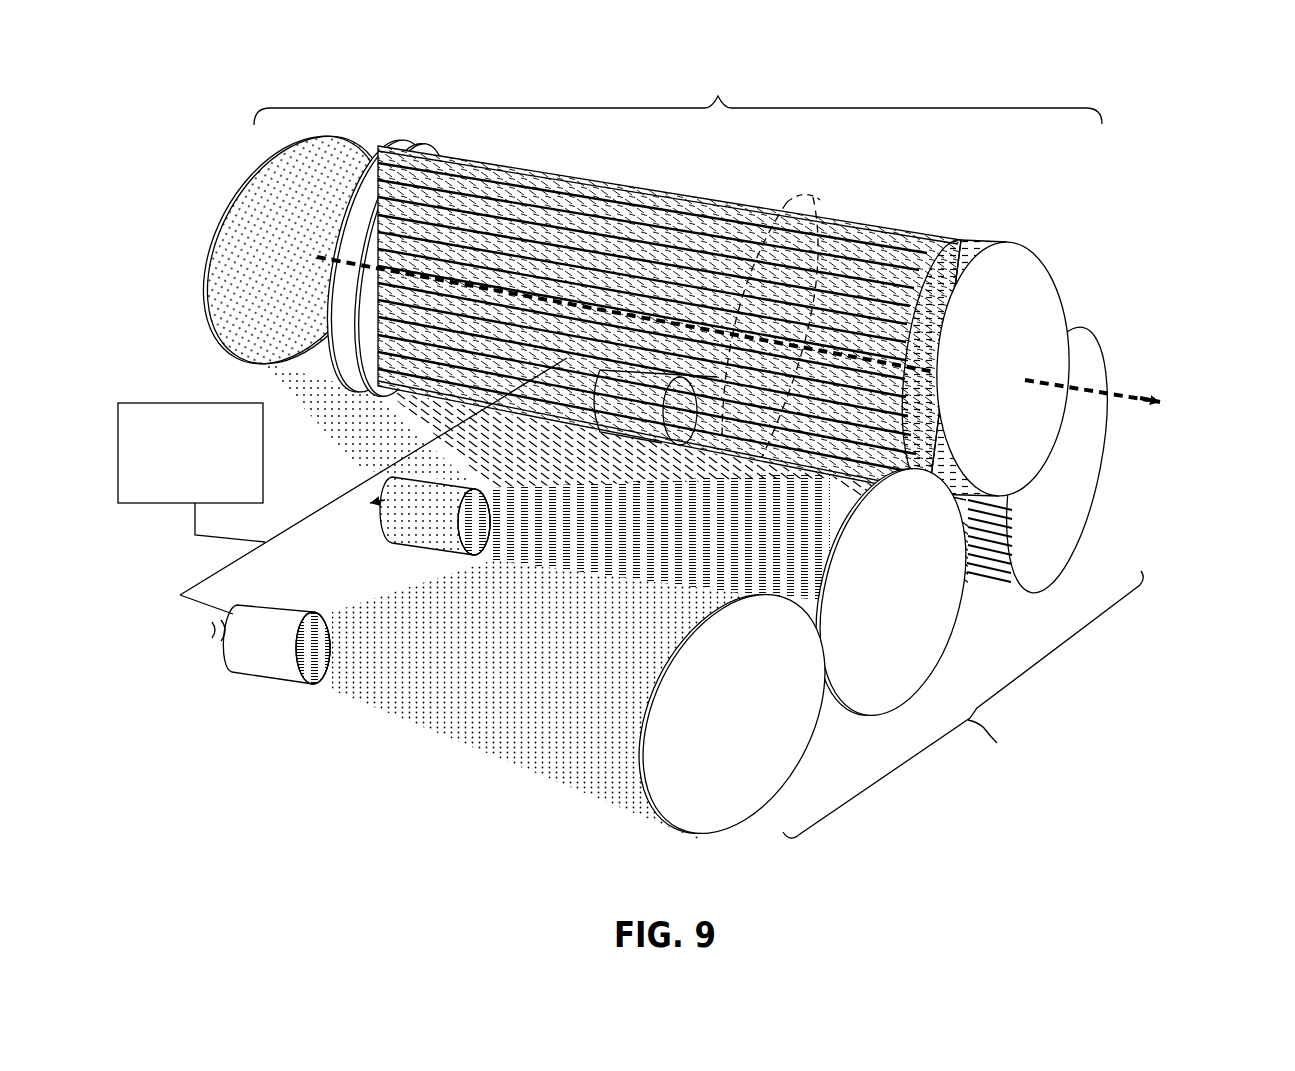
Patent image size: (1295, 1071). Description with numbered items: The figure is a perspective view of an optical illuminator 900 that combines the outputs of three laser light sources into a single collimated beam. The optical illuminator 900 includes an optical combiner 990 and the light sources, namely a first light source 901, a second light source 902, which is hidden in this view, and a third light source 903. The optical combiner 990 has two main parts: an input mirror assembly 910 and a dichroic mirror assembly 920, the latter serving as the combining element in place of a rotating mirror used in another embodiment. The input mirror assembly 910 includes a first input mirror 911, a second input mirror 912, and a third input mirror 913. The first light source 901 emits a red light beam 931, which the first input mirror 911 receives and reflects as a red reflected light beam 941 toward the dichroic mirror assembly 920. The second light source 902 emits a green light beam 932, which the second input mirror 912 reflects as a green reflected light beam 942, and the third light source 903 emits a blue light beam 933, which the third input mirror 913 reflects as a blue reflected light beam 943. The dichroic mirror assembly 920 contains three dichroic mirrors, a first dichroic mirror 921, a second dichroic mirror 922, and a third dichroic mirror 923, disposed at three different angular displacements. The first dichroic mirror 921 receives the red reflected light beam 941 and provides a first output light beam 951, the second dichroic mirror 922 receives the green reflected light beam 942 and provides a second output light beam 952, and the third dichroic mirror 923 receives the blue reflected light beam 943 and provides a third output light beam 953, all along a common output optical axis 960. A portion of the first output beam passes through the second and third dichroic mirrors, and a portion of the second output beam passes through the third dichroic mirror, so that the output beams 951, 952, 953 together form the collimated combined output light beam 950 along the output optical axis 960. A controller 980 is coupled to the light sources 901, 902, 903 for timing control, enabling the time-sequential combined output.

The optical illuminator 900 is at (1188, 72).
The optical combiner 990 is at (678, 97).
The dichroic mirror assembly 920 is at (305, 294).
The first dichroic mirror 921 is at (240, 197).
The second dichroic mirror 922 is at (317, 257).
The third dichroic mirror 923 is at (343, 312).
The second light source 902 is at (616, 312).
The collimated combined output light beam 950 is at (852, 292).
The first output light beam 951 is at (852, 304).
The second output light beam 952 is at (978, 168).
The third output light beam 953 is at (807, 190).
The output optical axis 960 is at (1113, 392).
The controller 980 is at (136, 403).
The blue reflected light beam 943 is at (452, 394).
The third light source 903 is at (392, 547).
The blue light beam 933 is at (499, 565).
The first light source 901 is at (267, 682).
The red light beam 931 is at (426, 729).
The red reflected light beam 941 is at (536, 666).
The first input mirror 911 is at (773, 753).
The third input mirror 913 is at (882, 670).
The second input mirror 912 is at (1065, 527).
The input mirror assembly 910 is at (963, 704).
The green light beam 932 is at (1004, 574).
The green reflected light beam 942 is at (982, 560).